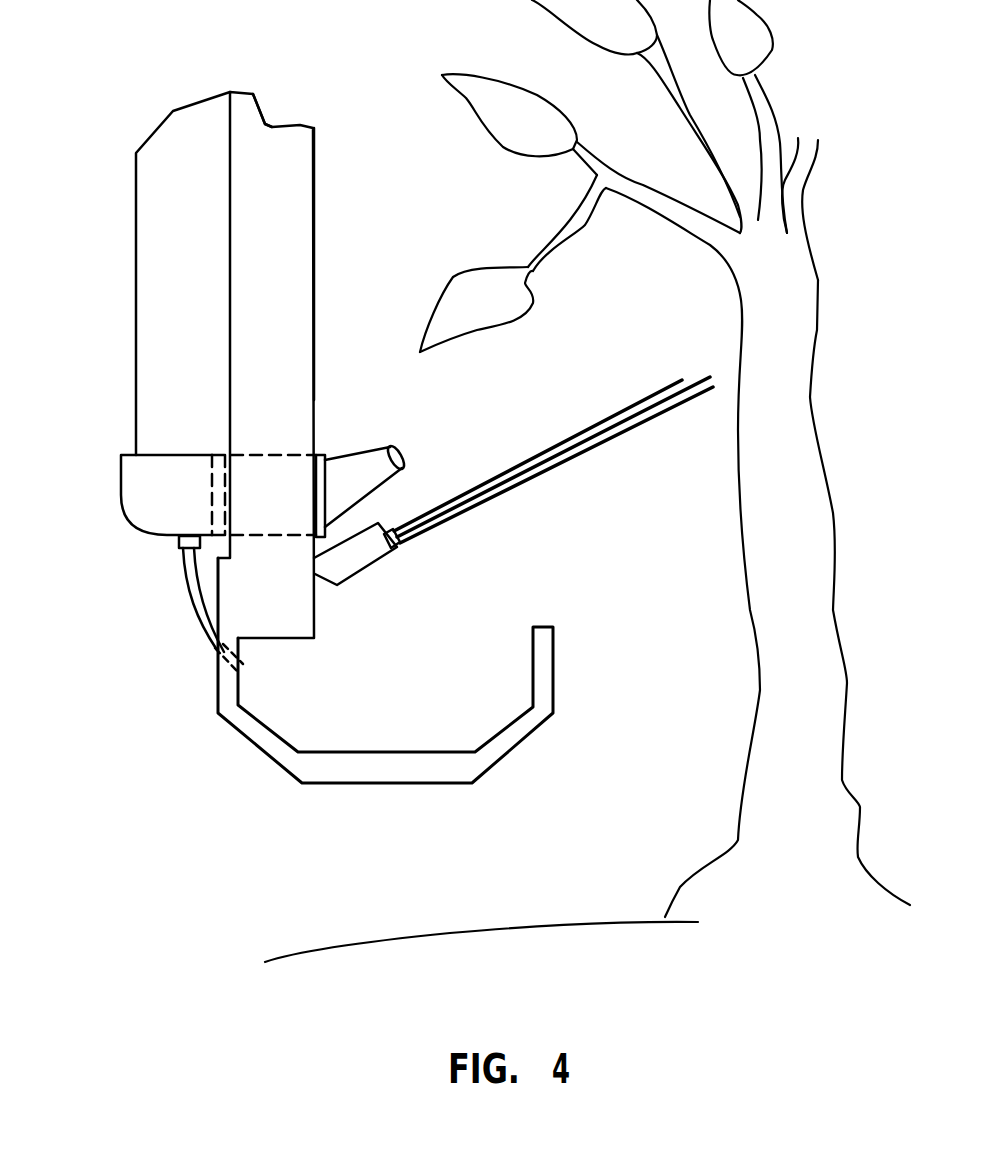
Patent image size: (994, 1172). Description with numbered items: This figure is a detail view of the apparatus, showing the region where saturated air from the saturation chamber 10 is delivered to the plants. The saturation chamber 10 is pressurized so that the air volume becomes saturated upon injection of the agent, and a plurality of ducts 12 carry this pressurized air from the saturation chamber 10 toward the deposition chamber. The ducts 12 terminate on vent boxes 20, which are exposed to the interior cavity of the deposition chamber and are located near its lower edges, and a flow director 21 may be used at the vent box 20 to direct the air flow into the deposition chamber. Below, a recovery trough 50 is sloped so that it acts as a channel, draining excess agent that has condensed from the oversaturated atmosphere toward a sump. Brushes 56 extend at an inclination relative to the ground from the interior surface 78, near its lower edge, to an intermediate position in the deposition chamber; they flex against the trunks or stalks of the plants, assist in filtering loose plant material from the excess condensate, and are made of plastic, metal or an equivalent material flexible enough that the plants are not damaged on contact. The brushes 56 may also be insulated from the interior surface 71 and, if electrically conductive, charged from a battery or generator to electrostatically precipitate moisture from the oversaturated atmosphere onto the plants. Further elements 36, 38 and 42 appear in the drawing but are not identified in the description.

The saturation chamber 10 is at (124, 389).
The ducts 12 is at (140, 223).
The vent boxes 20 is at (133, 497).
The flow director 21 is at (362, 450).
The container 36 is at (213, 500).
The tube 38 is at (195, 623).
The connector 42 is at (177, 550).
The recovery trough 50 is at (265, 747).
The brushes 56 is at (537, 478).
The interior surface 71 is at (266, 120).
The interior surface 78 is at (314, 187).